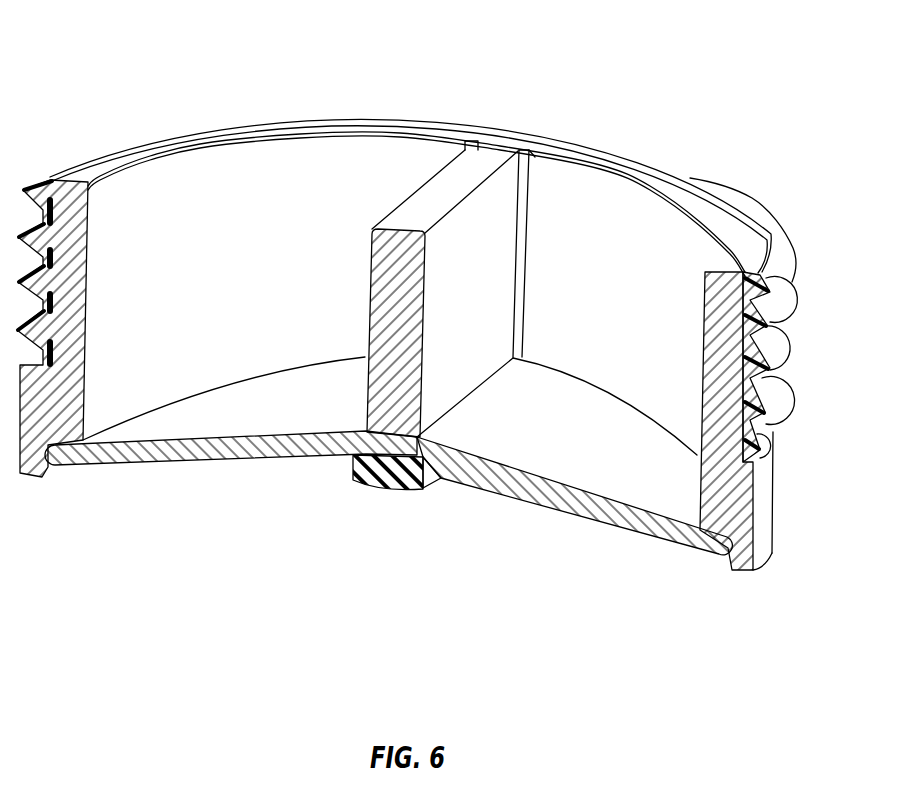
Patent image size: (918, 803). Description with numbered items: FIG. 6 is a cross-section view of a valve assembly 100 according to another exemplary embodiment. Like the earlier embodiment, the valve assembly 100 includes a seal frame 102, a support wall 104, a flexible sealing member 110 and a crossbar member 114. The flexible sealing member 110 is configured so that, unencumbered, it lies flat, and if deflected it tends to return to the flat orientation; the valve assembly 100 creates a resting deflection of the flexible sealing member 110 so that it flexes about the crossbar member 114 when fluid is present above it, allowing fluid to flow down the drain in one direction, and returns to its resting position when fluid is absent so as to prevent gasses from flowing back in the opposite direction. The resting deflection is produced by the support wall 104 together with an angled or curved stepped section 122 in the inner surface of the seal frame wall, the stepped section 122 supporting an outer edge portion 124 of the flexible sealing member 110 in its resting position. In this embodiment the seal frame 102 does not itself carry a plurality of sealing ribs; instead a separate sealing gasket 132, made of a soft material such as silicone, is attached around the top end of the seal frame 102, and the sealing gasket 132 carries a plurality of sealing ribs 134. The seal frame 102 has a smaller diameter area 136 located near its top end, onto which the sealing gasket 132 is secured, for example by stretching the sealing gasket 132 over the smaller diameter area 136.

The valve assembly 100 is at (229, 86).
The seal frame 102 is at (763, 530).
The support wall 104 is at (493, 215).
The flexible sealing member 110 is at (573, 503).
The crossbar member 114 is at (383, 489).
The stepped section 122 is at (58, 490).
The outer edge portion 124 is at (97, 458).
The sealing gasket 132 is at (787, 350).
The sealing ribs 134 is at (782, 308).
The smaller diameter area 136 is at (808, 386).